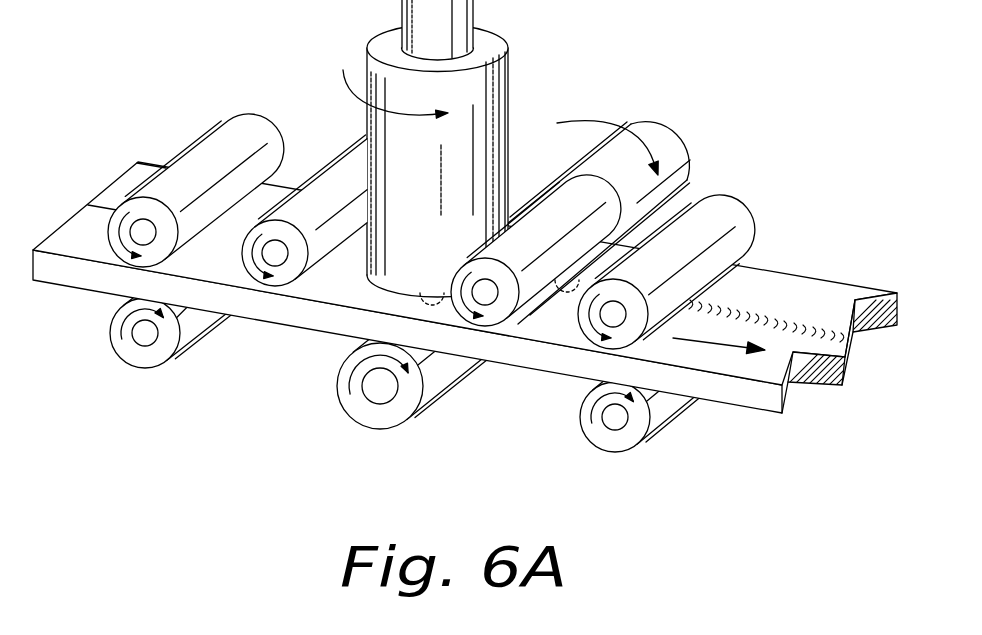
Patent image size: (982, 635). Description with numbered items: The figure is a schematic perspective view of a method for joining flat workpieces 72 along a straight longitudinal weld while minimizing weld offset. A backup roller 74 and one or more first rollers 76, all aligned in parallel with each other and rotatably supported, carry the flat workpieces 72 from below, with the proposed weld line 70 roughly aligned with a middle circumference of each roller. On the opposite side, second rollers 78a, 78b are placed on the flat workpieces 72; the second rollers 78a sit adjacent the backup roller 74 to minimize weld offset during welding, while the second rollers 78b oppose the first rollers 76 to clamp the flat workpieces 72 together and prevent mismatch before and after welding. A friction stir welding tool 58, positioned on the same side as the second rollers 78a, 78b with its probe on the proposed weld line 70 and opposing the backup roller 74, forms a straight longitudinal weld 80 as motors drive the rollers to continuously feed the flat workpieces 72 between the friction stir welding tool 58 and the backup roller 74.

The friction stir welding tool 58 is at (515, 89).
The proposed weld line 70 is at (237, 232).
The flat workpieces 72 is at (152, 162).
The backup roller 74 is at (382, 433).
The first rollers 76 is at (128, 368).
The second rollers 78a is at (353, 165).
The second rollers 78b is at (250, 115).
The straight longitudinal weld 80 is at (793, 318).